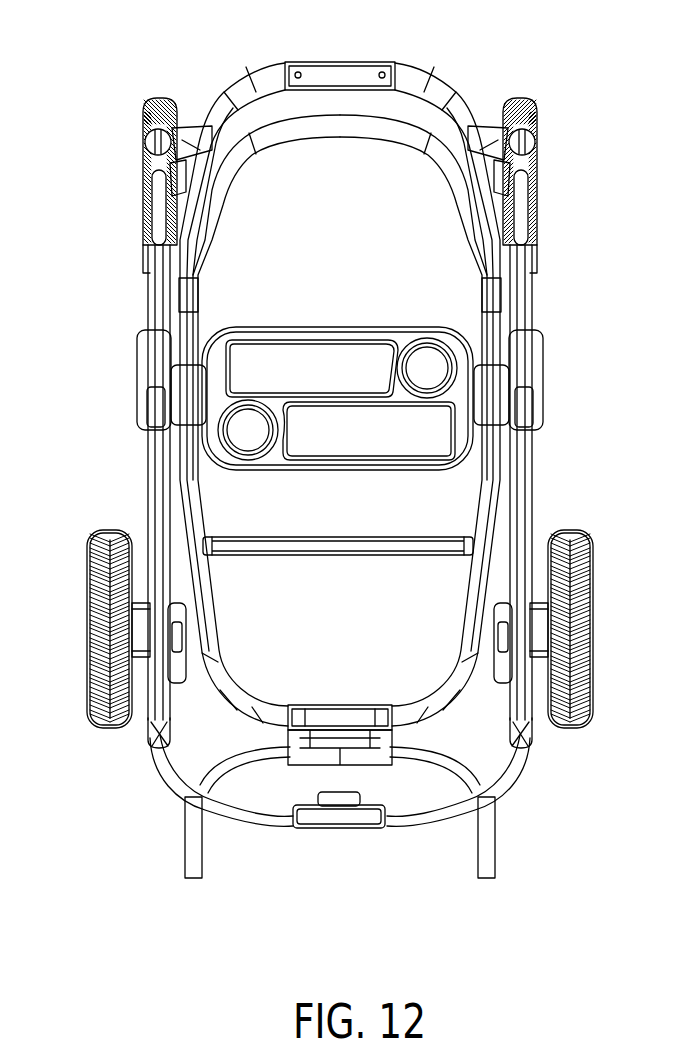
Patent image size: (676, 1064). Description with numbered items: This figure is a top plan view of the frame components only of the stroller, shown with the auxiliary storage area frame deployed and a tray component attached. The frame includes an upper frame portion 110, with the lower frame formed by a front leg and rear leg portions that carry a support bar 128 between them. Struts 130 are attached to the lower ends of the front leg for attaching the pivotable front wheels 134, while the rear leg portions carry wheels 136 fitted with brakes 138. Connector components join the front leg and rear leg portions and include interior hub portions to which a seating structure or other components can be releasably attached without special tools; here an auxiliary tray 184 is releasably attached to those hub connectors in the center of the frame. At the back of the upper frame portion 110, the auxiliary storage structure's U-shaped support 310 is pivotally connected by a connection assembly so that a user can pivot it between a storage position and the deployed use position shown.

The upper frame portion 110 is at (465, 137).
The struts 130 is at (183, 147).
The front wheels 134 is at (145, 113).
The auxiliary tray 184 is at (343, 356).
The support bar 128 is at (348, 550).
The wheels 136 is at (87, 620).
The brakes 138 is at (152, 737).
The U-shaped support 310 is at (487, 840).